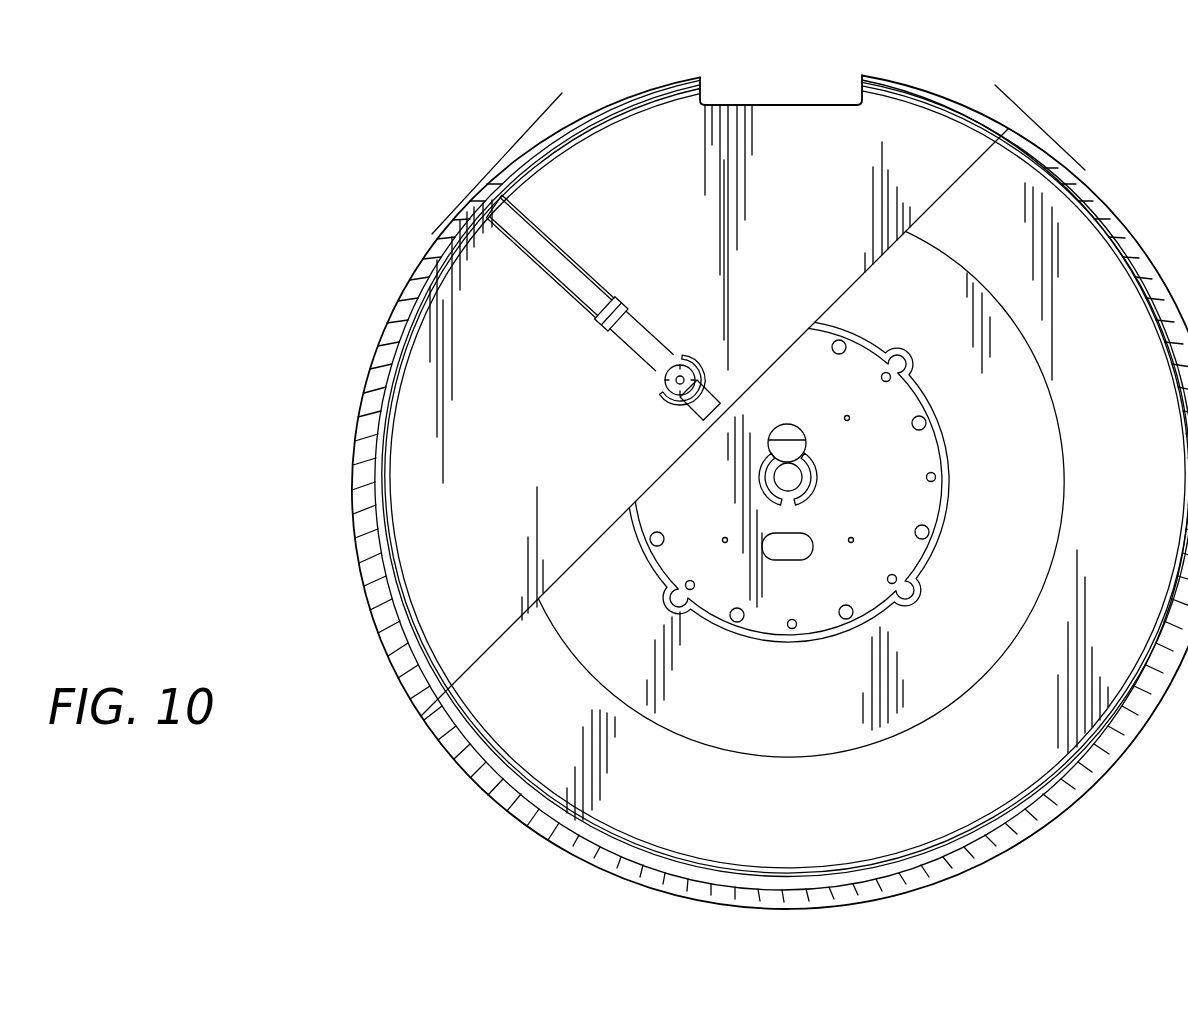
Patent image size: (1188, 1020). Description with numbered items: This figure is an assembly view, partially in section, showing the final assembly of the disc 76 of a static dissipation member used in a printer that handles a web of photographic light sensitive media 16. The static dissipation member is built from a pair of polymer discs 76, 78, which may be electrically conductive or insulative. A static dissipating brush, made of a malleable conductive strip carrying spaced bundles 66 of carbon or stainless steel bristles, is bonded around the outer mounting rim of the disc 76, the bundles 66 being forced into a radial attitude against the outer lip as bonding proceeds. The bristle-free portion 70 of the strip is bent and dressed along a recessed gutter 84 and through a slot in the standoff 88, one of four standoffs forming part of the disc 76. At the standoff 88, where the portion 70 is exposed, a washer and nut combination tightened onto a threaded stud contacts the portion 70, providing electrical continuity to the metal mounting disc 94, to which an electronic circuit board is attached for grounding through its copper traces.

The web of photographic light sensitive media 16 is at (1023, 110).
The bundles of bristles 66 is at (378, 385).
The portion of strip 70 is at (580, 282).
The recessed gutter 84 is at (556, 274).
The standoff 88 is at (664, 393).
The metal mounting disc 94 is at (893, 493).
The disc 76 is at (490, 508).
The disc 78 is at (793, 823).